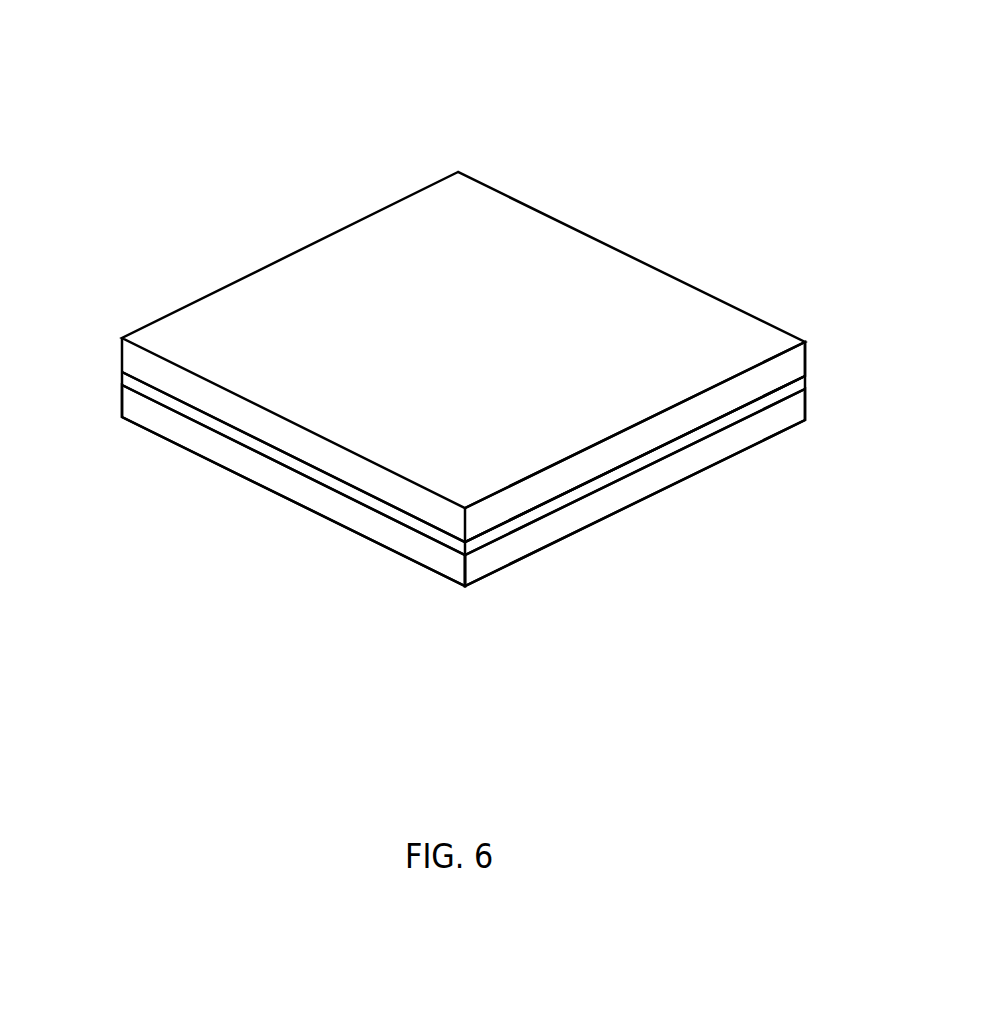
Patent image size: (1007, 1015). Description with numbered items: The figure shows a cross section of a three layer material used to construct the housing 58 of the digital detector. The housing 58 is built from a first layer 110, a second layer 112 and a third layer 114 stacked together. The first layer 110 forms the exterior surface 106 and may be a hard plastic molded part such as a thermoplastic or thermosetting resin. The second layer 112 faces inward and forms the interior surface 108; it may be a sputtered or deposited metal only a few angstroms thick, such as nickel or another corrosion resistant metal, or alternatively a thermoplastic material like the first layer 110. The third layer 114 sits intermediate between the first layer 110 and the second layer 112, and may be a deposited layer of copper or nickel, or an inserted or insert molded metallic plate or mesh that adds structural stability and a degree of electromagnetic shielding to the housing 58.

The housing 58 is at (575, 127).
The exterior surface 106 is at (303, 295).
The interior surface 108 is at (582, 532).
The first layer 110 is at (790, 368).
The second layer 112 is at (395, 535).
The third layer 114 is at (127, 380).